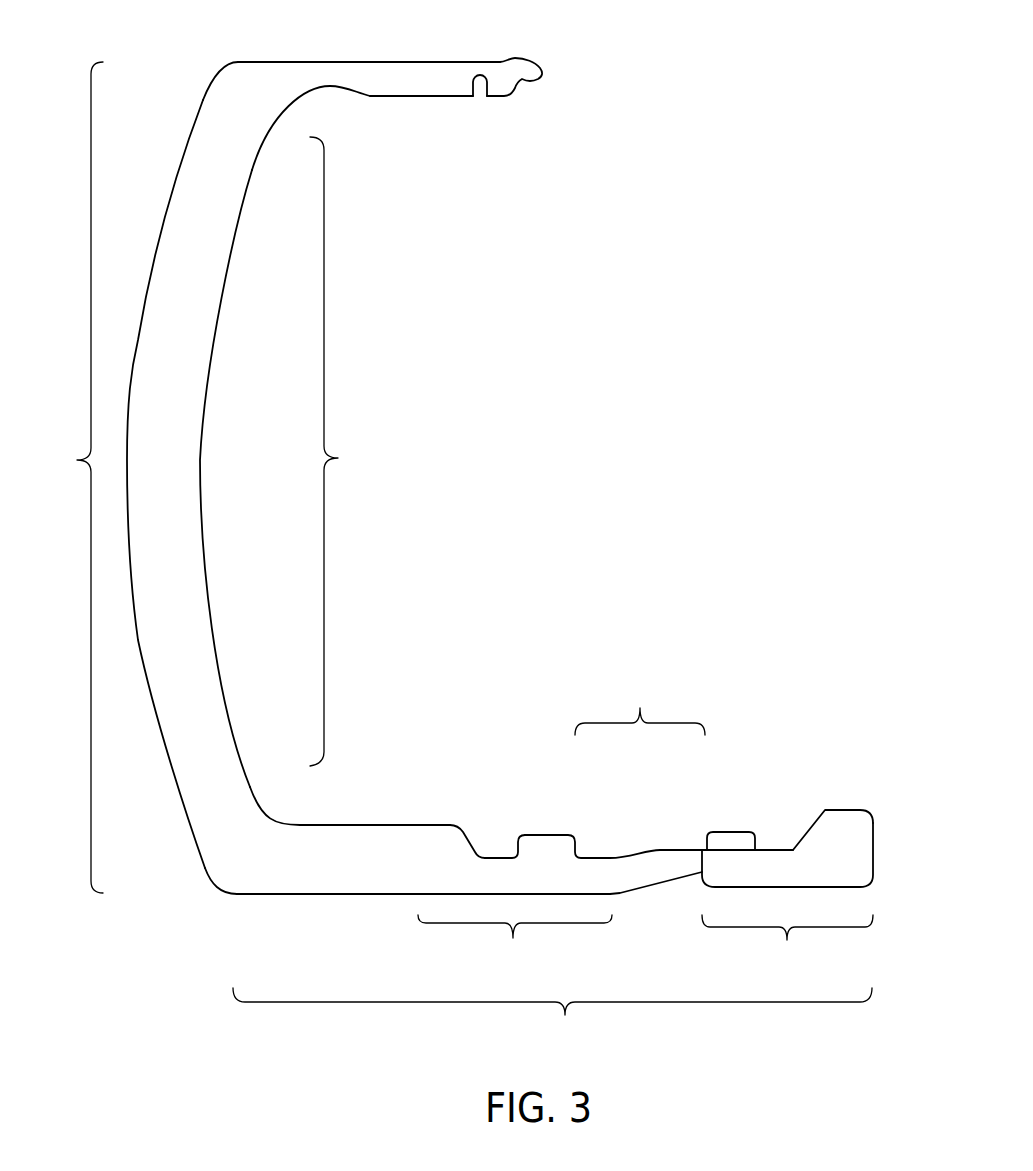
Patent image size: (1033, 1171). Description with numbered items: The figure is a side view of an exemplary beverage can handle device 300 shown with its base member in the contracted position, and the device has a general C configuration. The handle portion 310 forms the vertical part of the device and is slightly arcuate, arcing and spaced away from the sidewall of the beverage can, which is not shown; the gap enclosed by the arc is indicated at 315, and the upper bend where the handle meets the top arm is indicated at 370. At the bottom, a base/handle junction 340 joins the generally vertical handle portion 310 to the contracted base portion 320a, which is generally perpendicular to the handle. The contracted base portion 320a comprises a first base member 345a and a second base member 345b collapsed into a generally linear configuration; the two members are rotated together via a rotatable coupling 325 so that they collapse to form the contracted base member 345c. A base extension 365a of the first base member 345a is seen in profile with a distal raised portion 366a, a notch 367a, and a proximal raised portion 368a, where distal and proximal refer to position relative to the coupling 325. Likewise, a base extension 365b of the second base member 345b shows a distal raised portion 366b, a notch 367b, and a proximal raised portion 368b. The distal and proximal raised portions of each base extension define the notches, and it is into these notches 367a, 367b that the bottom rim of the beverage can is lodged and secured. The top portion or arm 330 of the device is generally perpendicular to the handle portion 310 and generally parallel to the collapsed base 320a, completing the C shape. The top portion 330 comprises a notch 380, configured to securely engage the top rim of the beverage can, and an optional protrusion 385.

The beverage can handle device 300 is at (67, 477).
The handle portion 310 is at (192, 392).
The opening 315 is at (344, 451).
The contracted base portion 320a is at (552, 1018).
The rotatable coupling 325 is at (692, 880).
The top portion 330 is at (397, 80).
The base/handle junction 340 is at (255, 830).
The first base member 345a is at (320, 878).
The second base member 345b is at (853, 867).
The contracted base member 345c is at (640, 768).
The base extension 365a is at (515, 946).
The base extension 365b is at (787, 946).
The distal raised portion 366a is at (410, 840).
The distal raised portion 366b is at (847, 827).
The notch 367a is at (496, 842).
The notch 367b is at (775, 840).
The proximal raised portion 368a is at (600, 872).
The proximal raised portion 368b is at (722, 843).
The upper bend 370 is at (216, 109).
The notch 380 is at (477, 89).
The protrusion 385 is at (533, 84).